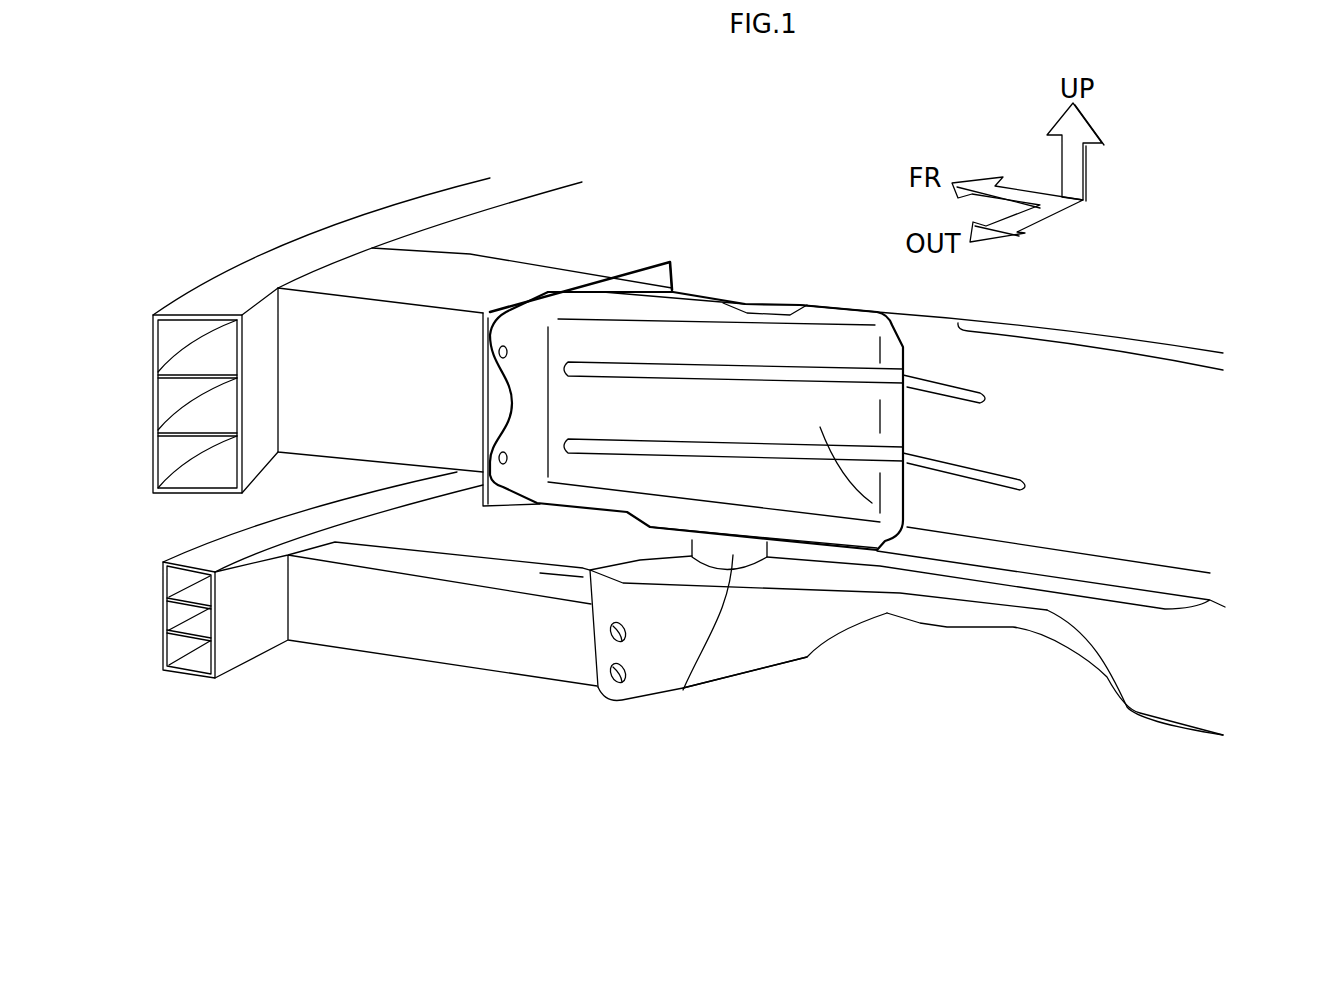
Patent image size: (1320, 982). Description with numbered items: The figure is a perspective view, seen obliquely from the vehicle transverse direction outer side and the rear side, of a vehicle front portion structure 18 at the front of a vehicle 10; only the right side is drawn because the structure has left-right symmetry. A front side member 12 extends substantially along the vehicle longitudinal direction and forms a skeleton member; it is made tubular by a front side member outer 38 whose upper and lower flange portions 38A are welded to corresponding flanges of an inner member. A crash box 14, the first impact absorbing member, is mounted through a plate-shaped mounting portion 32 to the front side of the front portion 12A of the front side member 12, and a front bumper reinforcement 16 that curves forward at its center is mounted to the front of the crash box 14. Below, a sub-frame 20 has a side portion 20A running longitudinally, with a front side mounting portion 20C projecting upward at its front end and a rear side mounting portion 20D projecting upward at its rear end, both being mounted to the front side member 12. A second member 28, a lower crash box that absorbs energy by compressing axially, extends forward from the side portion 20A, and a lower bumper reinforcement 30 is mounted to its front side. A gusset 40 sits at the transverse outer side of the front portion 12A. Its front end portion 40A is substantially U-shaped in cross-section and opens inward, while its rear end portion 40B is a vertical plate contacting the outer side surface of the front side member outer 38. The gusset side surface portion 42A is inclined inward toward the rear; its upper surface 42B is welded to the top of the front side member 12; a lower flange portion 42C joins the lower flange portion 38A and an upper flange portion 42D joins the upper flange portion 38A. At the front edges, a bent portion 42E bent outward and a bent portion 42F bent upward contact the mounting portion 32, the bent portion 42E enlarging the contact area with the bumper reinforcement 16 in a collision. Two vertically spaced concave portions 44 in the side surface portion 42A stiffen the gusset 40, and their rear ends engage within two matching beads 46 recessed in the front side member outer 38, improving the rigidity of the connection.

The vehicle 10 is at (607, 151).
The front side member 12 is at (948, 307).
The front portion 12A is at (725, 303).
The crash box 14 is at (486, 268).
The front bumper reinforcement 16 is at (426, 195).
The vehicle front portion structure 18 is at (700, 247).
The sub-frame 20 is at (937, 655).
The side portion 20A is at (803, 630).
The front side mounting portion 20C is at (683, 690).
The rear side mounting portion 20D is at (1213, 607).
The second member 28 is at (490, 653).
The lower bumper reinforcement 30 is at (363, 502).
The mounting portion 32 is at (648, 277).
The front side member outer 38 is at (1102, 372).
The flange portion 38A is at (1047, 333).
The gusset 40 is at (701, 455).
The front end portion 40A is at (573, 404).
The rear end portion 40B is at (890, 420).
The side surface portion 42A is at (820, 427).
The upper surface 42B is at (662, 311).
The flange portion 42C is at (830, 538).
The flange portion 42D is at (849, 317).
The bent portion 42E is at (513, 370).
The bent portion 42F is at (578, 303).
The concave portions 44 is at (728, 372).
The beads 46 is at (940, 387).